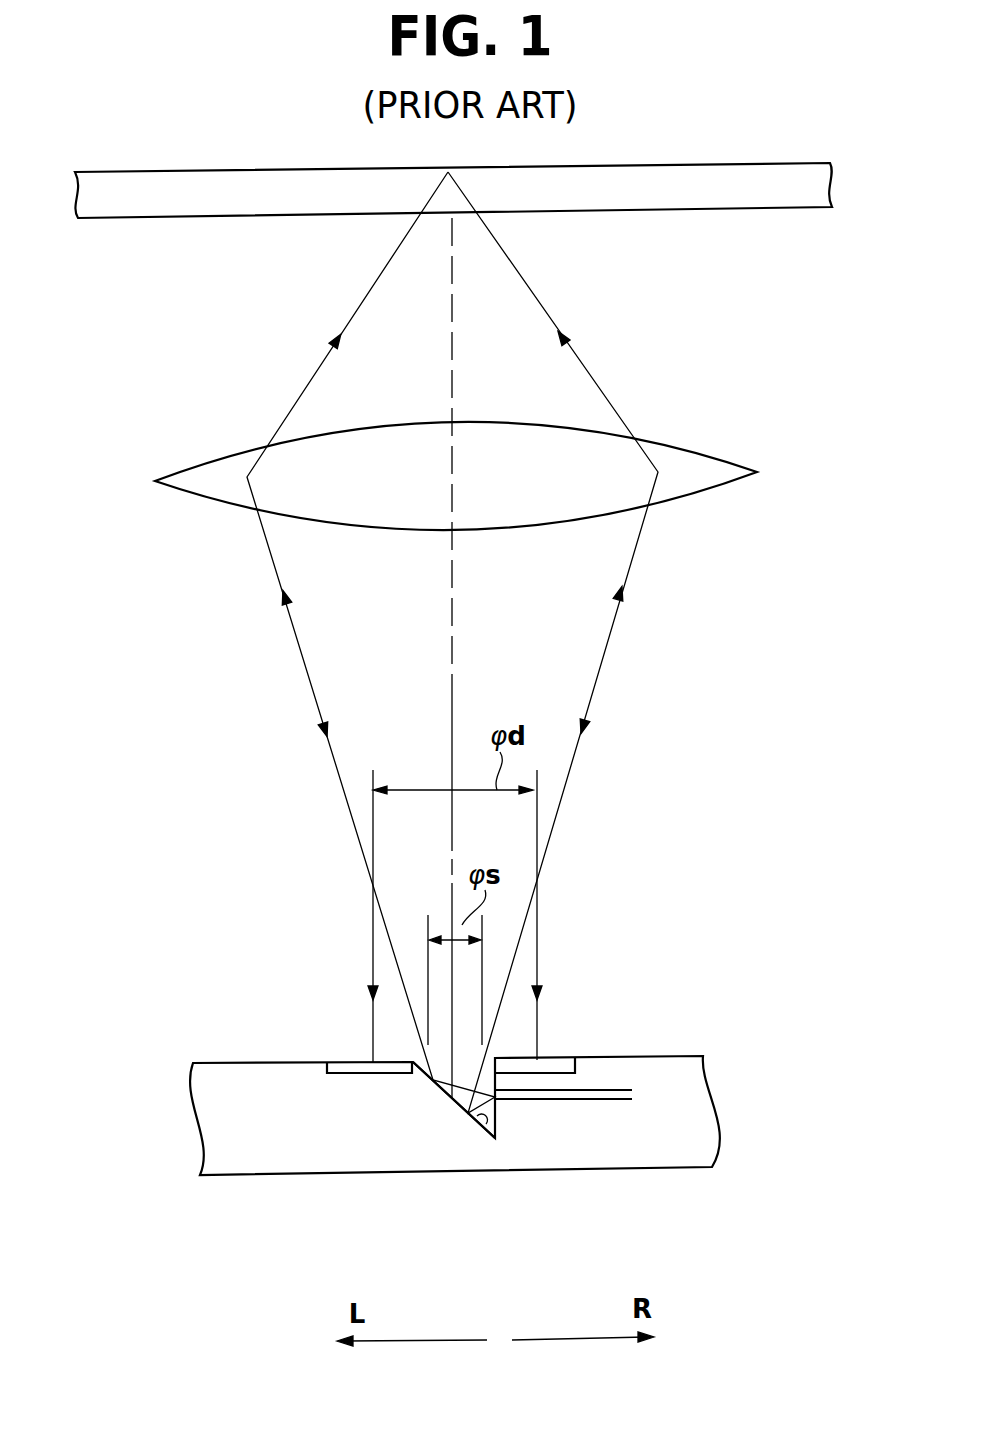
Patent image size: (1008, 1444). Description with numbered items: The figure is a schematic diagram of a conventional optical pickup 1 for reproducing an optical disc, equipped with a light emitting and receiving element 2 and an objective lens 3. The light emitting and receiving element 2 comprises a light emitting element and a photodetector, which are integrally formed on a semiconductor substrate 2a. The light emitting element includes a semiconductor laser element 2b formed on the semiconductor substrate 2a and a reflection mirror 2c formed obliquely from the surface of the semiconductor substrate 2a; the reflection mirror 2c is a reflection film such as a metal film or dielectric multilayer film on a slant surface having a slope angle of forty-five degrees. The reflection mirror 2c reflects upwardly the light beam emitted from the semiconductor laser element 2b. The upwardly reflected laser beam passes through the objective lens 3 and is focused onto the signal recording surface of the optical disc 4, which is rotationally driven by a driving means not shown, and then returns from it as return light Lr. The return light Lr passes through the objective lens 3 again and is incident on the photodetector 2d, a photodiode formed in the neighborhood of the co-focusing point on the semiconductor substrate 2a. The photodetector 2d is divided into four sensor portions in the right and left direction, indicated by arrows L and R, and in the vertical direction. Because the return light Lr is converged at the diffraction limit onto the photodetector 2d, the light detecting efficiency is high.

The optical pickup system 1 is at (800, 396).
The light emitting and receiving element 2 is at (462, 1067).
The semiconductor substrate 2a is at (277, 1140).
The semiconductor laser element 2b is at (600, 1102).
The reflection mirror 2c is at (488, 1140).
The photodetector 2d is at (352, 1062).
The objective lens 3 is at (688, 445).
The optical disc 4 is at (735, 210).
The return light Lr is at (538, 946).